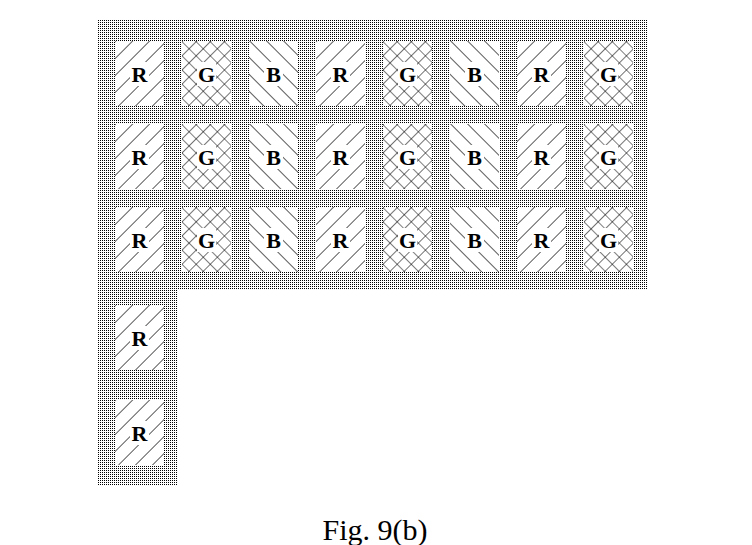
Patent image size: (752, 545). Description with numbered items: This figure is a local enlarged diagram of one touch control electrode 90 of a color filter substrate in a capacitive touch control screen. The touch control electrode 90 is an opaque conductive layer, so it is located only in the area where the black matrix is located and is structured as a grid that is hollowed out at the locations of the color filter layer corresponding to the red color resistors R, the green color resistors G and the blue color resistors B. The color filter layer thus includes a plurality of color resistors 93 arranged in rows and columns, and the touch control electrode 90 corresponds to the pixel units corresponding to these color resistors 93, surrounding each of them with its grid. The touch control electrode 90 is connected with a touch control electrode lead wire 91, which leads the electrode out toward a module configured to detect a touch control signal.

The touch control electrode 90 is at (368, 252).
The touch control electrode lead wire 91 is at (105, 385).
The color resistor 93 is at (206, 255).